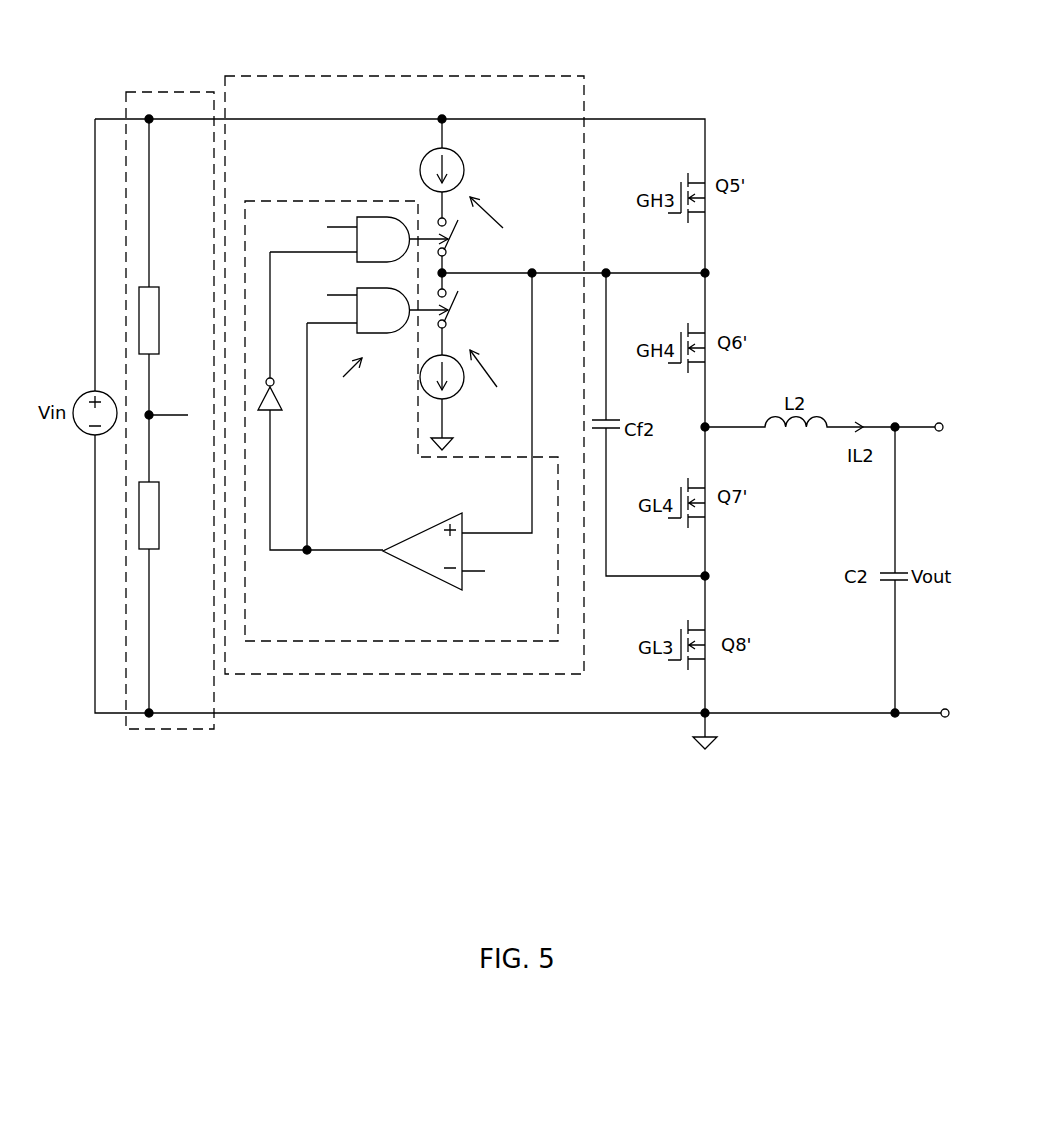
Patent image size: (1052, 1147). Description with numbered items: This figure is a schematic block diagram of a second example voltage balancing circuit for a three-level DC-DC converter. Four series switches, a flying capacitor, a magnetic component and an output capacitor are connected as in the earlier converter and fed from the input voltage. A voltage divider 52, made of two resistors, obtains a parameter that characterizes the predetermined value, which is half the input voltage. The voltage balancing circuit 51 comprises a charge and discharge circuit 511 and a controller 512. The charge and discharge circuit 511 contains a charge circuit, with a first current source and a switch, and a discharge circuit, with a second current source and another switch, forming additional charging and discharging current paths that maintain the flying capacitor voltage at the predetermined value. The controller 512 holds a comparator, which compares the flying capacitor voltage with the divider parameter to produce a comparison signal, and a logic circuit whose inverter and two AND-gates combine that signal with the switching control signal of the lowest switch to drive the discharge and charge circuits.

The voltage balancing circuit 51 is at (333, 75).
The voltage divider 52 is at (142, 91).
The charge and discharge circuit 511 is at (497, 162).
The controller 512 is at (411, 421).